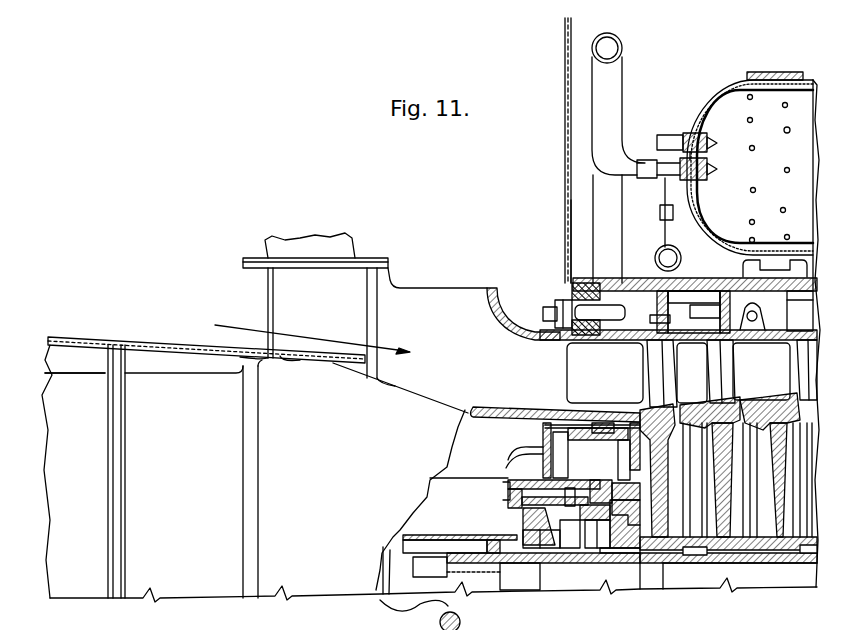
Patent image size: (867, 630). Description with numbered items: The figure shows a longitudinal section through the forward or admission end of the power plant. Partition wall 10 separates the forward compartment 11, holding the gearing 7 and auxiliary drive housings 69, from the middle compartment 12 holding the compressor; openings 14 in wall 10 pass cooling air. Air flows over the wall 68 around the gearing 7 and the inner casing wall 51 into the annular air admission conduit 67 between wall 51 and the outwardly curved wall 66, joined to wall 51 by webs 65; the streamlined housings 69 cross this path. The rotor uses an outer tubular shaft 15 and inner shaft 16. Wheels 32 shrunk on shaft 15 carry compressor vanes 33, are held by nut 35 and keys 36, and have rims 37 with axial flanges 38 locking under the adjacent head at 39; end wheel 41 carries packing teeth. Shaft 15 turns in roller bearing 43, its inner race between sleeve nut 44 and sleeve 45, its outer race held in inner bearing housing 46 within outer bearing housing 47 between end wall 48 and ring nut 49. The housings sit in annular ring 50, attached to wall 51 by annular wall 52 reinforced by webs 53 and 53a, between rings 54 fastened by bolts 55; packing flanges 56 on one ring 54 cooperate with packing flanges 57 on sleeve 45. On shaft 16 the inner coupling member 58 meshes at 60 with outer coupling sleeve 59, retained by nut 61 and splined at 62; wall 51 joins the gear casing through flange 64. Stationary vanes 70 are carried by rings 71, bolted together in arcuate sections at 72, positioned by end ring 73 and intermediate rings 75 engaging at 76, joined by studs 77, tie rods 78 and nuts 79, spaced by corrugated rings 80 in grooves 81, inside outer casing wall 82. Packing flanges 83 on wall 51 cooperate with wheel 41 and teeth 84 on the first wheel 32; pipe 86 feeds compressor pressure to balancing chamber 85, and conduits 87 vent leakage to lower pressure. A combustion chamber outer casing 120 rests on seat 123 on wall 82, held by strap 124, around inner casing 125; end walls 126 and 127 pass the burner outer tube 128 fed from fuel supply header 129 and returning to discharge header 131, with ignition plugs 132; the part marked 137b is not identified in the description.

The gearing 7 is at (177, 372).
The forward transverse partition wall 10 is at (565, 127).
The forward compartment 11 is at (473, 250).
The middle compartment 12 is at (660, 70).
The openings 14 is at (566, 250).
The outer tubular shaft 15 is at (660, 570).
The inner shaft 16 is at (769, 575).
The wheels 32 is at (785, 446).
The compressor vanes 33 is at (652, 376).
The nut 35 is at (610, 553).
The keys 36 is at (697, 556).
The annular rims or heads 37 is at (716, 408).
The axially extending annular flange 38 is at (755, 406).
The locking lip engagement 39 is at (705, 425).
The packing wheel 41 is at (625, 452).
The roller bearing 43 is at (550, 565).
The sleeve nut 44 is at (527, 563).
The sleeve 45 is at (586, 563).
The inner bearing housing 46 is at (522, 520).
The outer bearing housing 47 is at (571, 490).
The end wall 48 is at (522, 535).
The ring nut 49 is at (570, 552).
The annular ring 50 is at (532, 480).
The inner casing wall 51 is at (482, 409).
The annular wall 52 is at (543, 441).
The radially extending webs 53 is at (566, 458).
The webs 53a is at (455, 467).
The rings 54 is at (622, 484).
The bolts 55 is at (503, 488).
The packing flanges 56 is at (660, 486).
The packing flanges 57 is at (602, 550).
The inner coupling member 58 is at (462, 540).
The outer coupling sleeve 59 is at (440, 535).
The coupling teeth 60 is at (493, 555).
The nut 61 is at (383, 549).
The splines 62 is at (476, 567).
The flange 64 is at (125, 458).
The webs 65 is at (417, 293).
The outwardly curved wall 66 is at (495, 316).
The annular air admission conduit 67 is at (386, 383).
The wall 68 is at (94, 337).
The tubular housings 69 is at (268, 302).
The stationary vanes 70 is at (612, 357).
The ring 71 is at (809, 328).
The bolted connection 72 is at (745, 292).
The end ring 73 is at (572, 291).
The intermediate radially extending rings 75 is at (622, 313).
The annular projections 76 is at (657, 346).
The studs 77 is at (694, 312).
The tie rods 78 is at (612, 305).
The nuts 79 is at (543, 301).
The annular corrugated rings 80 is at (660, 292).
The annular grooves 81 is at (677, 291).
The outer casing wall 82 is at (588, 283).
The packing flanges 83 is at (633, 423).
The teeth 84 is at (637, 440).
The pressure balancing chamber 85 is at (600, 423).
The pipe 86 is at (507, 462).
The conduits 87 is at (578, 424).
The outer cylindrical casing 120 is at (737, 78).
The seat 123 is at (767, 263).
The metal strap 124 is at (778, 72).
The inner cylindrical casing 125 is at (762, 98).
The end wall 126 is at (692, 112).
The end wall 127 is at (706, 100).
The outer tube 128 is at (713, 180).
The circular fuel supply header 129 is at (620, 46).
The circular fuel discharge header 131 is at (659, 251).
The ignition plugs 132 is at (664, 136).
The air hole 137b is at (755, 124).